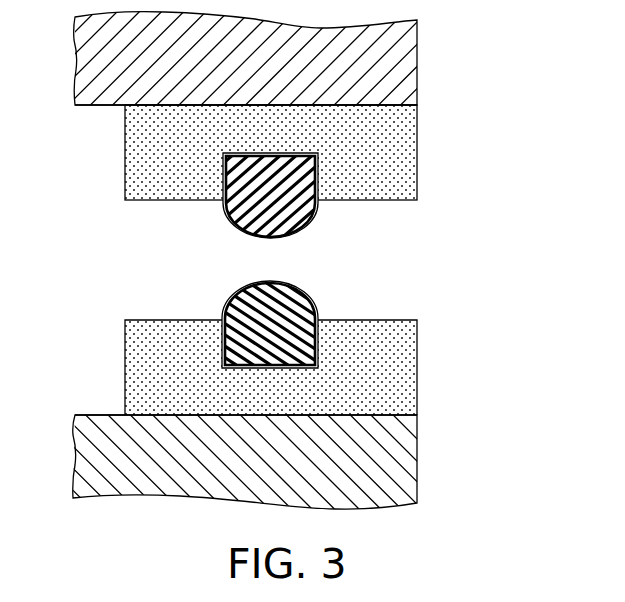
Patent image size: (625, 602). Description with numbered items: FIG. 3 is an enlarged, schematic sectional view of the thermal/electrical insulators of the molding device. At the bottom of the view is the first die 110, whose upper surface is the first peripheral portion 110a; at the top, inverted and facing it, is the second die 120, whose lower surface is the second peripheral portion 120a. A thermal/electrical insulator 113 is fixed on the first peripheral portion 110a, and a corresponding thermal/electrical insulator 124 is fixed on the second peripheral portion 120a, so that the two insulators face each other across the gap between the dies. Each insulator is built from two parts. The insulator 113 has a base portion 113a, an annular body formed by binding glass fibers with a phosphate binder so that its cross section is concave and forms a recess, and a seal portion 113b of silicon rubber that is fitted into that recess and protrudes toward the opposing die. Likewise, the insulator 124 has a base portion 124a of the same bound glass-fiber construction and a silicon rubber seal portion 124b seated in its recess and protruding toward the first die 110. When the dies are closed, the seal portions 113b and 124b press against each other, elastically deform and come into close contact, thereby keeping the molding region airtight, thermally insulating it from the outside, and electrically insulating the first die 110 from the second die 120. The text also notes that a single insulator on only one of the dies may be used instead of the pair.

The first die 110 is at (417, 460).
The first peripheral portion 110a is at (84, 414).
The thermal/electrical insulator 113 is at (272, 346).
The base portion 113a is at (417, 330).
The seal portion 113b is at (316, 305).
The second die 120 is at (417, 70).
The second peripheral portion 120a is at (85, 107).
The thermal/electrical insulator 124 is at (332, 172).
The base portion 124a is at (417, 178).
The seal portion 124b is at (314, 206).